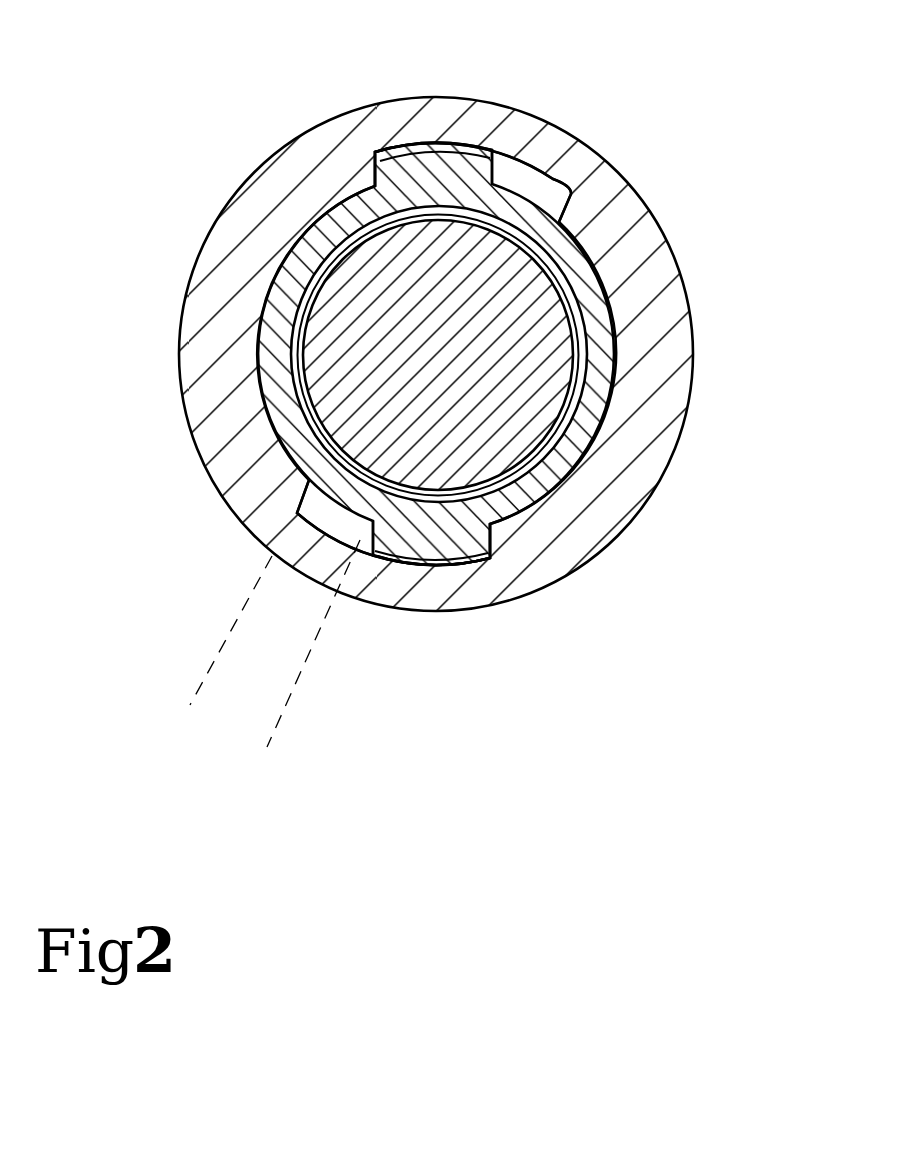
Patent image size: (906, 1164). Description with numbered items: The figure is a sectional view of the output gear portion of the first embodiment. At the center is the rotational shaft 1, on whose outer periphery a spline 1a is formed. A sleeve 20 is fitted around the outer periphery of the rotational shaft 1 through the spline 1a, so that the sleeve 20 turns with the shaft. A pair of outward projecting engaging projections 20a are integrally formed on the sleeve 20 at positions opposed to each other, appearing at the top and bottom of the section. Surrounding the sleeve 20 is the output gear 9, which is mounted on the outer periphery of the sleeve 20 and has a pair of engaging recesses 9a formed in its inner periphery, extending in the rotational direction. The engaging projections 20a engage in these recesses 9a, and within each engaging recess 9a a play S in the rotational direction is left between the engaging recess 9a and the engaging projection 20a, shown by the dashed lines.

The rotational shaft 1 is at (522, 377).
The spline 1a is at (578, 446).
The output gear 9 is at (640, 237).
The engaging recess 9a is at (562, 197).
The sleeve 20 is at (548, 474).
The engaging projection 20a is at (432, 167).
The play S is at (300, 677).